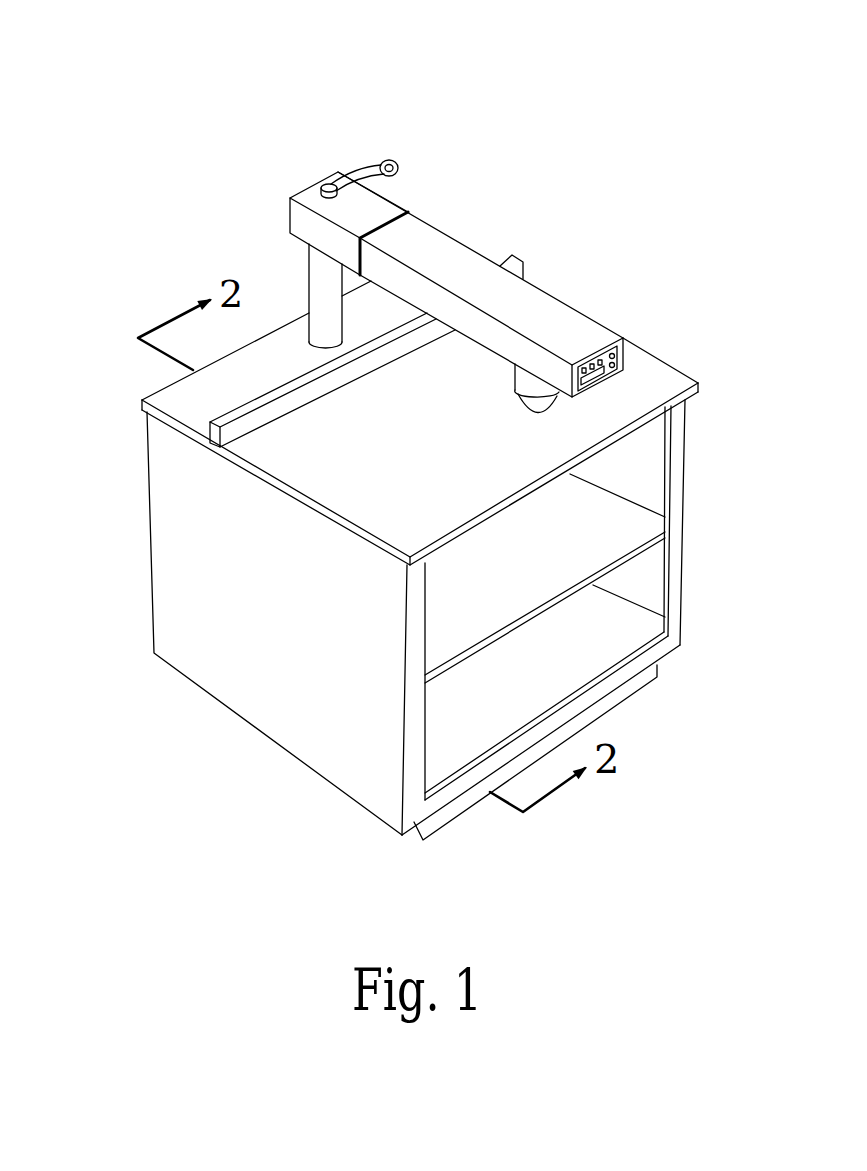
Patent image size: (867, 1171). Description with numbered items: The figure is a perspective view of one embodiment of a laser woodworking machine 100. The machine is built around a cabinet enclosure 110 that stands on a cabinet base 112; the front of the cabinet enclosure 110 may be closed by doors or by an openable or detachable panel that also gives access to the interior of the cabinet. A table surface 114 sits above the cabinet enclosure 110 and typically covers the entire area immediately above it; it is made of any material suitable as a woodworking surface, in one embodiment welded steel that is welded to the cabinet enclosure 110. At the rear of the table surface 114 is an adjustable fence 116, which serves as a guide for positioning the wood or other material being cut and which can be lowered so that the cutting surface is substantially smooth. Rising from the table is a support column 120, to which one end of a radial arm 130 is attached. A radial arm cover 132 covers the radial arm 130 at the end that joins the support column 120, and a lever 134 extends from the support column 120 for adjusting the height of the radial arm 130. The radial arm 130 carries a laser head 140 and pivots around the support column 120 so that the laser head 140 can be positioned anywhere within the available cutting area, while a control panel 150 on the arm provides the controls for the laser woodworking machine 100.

The laser woodworking machine 100 is at (436, 54).
The cabinet enclosure 110 is at (133, 378).
The cabinet base 112 is at (657, 667).
The table surface 114 is at (695, 374).
The adjustable fence 116 is at (210, 437).
The support column 120 is at (309, 272).
The radial arm 130 is at (440, 228).
The radial arm cover 132 is at (310, 192).
The lever 134 is at (396, 160).
The laser head 140 is at (557, 405).
The control panel 150 is at (625, 345).